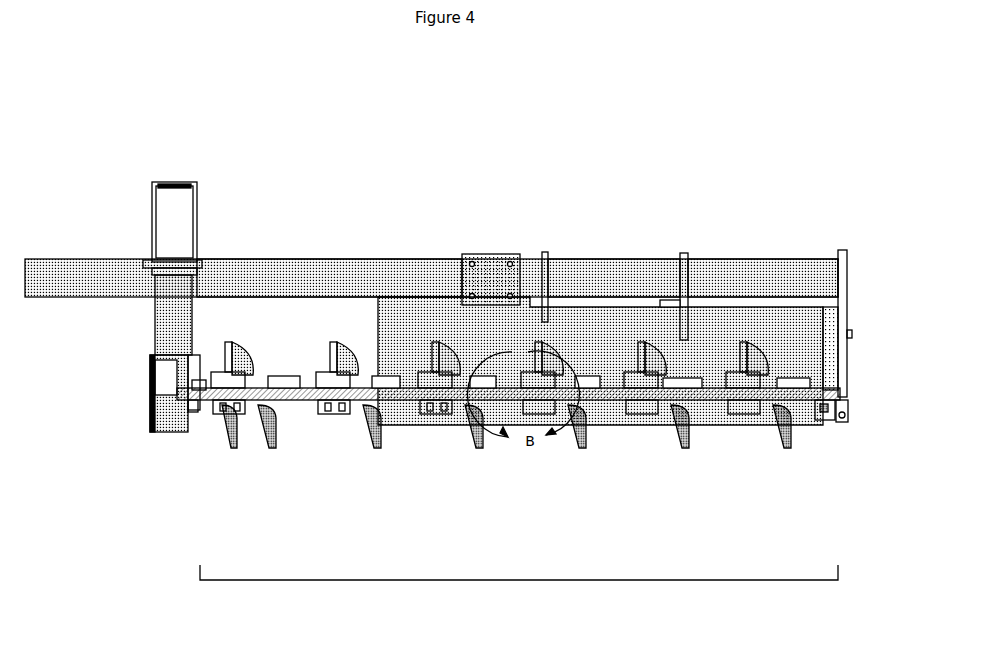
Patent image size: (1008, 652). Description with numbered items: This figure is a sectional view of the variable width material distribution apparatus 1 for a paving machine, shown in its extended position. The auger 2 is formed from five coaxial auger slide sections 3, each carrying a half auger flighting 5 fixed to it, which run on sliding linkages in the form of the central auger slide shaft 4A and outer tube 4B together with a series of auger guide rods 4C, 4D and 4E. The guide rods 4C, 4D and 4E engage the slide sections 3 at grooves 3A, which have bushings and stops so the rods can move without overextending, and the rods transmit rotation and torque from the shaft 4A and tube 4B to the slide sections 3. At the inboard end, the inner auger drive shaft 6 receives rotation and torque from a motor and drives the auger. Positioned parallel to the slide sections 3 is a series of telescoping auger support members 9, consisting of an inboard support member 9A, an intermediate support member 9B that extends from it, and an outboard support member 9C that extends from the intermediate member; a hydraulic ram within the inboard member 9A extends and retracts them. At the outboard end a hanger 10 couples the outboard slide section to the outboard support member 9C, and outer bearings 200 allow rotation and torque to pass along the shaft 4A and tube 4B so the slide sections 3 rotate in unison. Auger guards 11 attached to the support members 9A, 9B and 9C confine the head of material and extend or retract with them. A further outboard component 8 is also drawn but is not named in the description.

The material distribution apparatus 1 is at (533, 180).
The auger 2 is at (540, 580).
The auger slide sections 3 is at (333, 420).
The grooves 3A is at (228, 432).
The central auger slide shaft 4A is at (410, 415).
The outer tube 4B is at (626, 392).
The auger guide rod 4C is at (314, 415).
The auger guide rod 4D is at (302, 396).
The auger guide rod 4E is at (243, 420).
The half auger flighting 5 is at (272, 447).
The inner auger drive shaft 6 is at (185, 430).
The end bearing 8 is at (820, 420).
The auger support members 9 is at (68, 272).
The inboard auger support member 9A is at (326, 272).
The intermediate auger support member 9B is at (598, 280).
The outboard auger support member 9C is at (738, 283).
The hanger 10 is at (832, 348).
The auger guards 11 is at (788, 326).
The outer bearings 200 is at (841, 427).